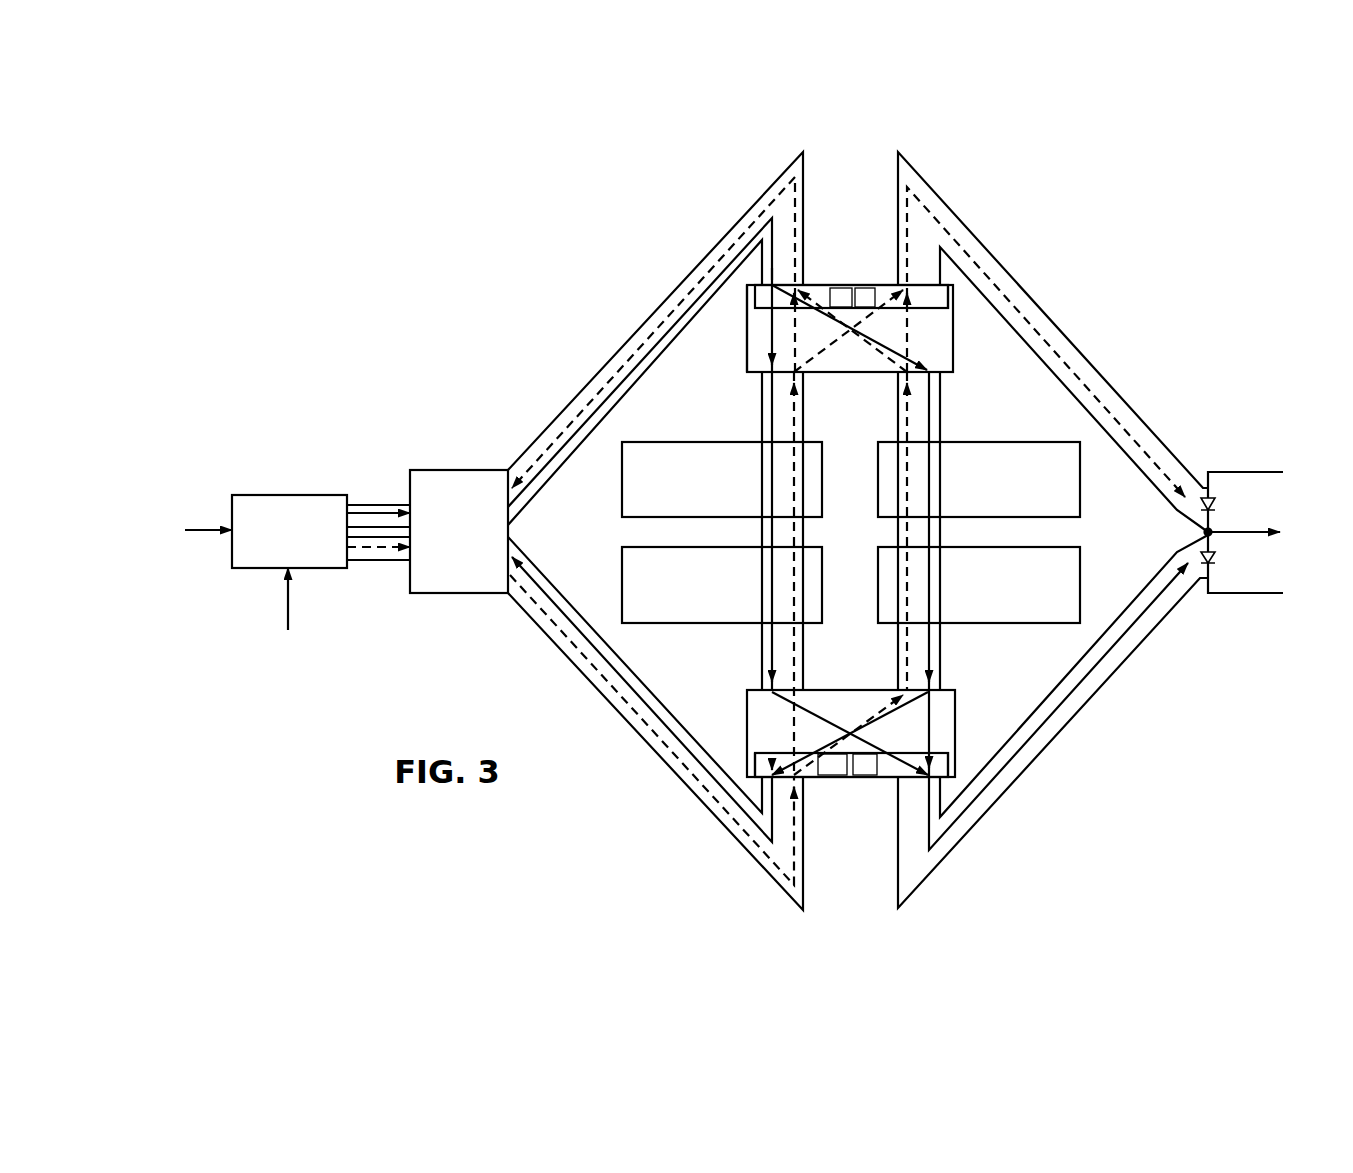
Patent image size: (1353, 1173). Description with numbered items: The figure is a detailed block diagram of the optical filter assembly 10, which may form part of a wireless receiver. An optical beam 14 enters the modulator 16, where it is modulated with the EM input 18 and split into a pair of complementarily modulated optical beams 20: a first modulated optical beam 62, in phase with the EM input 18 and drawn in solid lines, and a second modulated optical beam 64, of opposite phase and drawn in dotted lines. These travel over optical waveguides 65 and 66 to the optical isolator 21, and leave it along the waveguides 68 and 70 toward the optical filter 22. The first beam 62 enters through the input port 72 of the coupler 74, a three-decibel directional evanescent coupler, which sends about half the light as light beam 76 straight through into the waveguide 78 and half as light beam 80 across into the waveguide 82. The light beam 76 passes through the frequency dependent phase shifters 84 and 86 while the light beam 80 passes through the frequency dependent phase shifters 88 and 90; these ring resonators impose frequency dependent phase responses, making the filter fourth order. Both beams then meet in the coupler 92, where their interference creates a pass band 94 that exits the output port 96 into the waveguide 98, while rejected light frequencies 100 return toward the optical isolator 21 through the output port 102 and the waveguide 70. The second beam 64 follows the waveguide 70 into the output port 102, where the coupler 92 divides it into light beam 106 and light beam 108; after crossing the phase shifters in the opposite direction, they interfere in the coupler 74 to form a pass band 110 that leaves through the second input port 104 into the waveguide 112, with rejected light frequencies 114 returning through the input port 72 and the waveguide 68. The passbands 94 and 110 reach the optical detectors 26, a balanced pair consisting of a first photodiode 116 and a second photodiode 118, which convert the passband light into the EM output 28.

The optical filter assembly 10 is at (445, 352).
The optical beam 14 is at (200, 530).
The modulator 16 is at (292, 494).
The EM input 18 is at (290, 655).
The complementarily modulated optical beams 20 is at (361, 445).
The optical isolator 21 is at (447, 470).
The optical filter 22 is at (600, 298).
The optical detectors 26 is at (1258, 462).
The EM output 28 is at (1315, 563).
The first modulated optical beam 62 is at (360, 513).
The second modulated optical beam 64 is at (362, 547).
The optical waveguide 65 is at (383, 505).
The optical waveguide 66 is at (392, 560).
The waveguide 68 is at (600, 375).
The waveguide 70 is at (600, 690).
The input port 72 is at (755, 297).
The coupler 74 is at (743, 352).
The light beam 76 is at (762, 418).
The waveguide 78 is at (803, 388).
The light beam 80 is at (929, 400).
The waveguide 82 is at (905, 420).
The frequency dependent phase shifter 84 is at (683, 441).
The frequency dependent phase shifter 86 is at (683, 623).
The frequency dependent phase shifter 88 is at (1015, 441).
The frequency dependent phase shifter 90 is at (1010, 623).
The coupler 92 is at (750, 710).
The pass band 94 is at (992, 780).
The output port 96 is at (953, 760).
The waveguide 98 is at (1075, 713).
The light frequencies 100 is at (567, 608).
The output port 102 is at (750, 760).
The second input port 104 is at (945, 295).
The light beam 106 is at (795, 645).
The light beam 108 is at (903, 672).
The pass band 110 is at (995, 280).
The waveguide 112 is at (1075, 345).
The light frequencies 114 is at (700, 280).
The first photodiode 116 is at (1215, 505).
The second photodiode 118 is at (1215, 557).